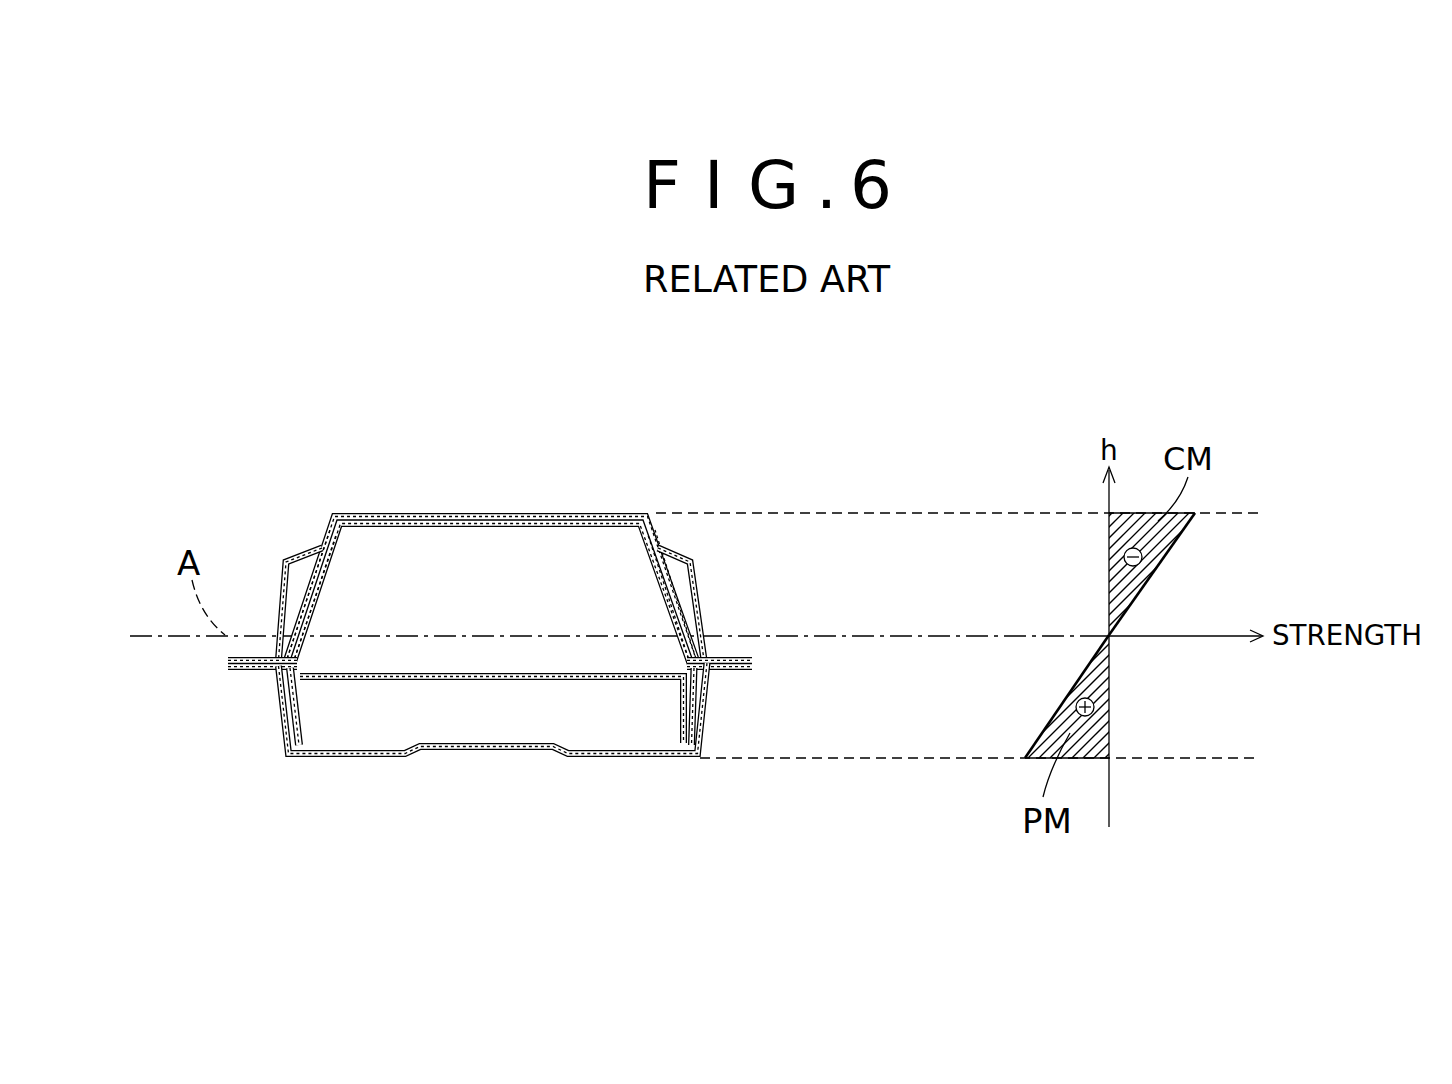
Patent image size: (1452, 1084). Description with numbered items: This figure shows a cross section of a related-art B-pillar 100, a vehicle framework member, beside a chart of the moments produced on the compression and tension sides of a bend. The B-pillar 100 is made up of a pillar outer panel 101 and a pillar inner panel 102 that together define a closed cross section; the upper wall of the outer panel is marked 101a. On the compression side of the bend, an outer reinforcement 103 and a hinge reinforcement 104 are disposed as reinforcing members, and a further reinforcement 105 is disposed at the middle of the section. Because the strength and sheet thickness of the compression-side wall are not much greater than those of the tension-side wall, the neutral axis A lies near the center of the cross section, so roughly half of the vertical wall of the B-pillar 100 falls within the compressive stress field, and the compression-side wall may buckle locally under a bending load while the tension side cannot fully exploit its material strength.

The B-pillar 100 is at (592, 467).
The pillar outer panel 101 is at (702, 563).
The top wall of outer panel 101a is at (478, 512).
The pillar inner panel 102 is at (703, 716).
The outer reinforcement 103 is at (684, 607).
The hinge reinforcement 104 is at (664, 611).
The reinforcement 105 is at (600, 683).